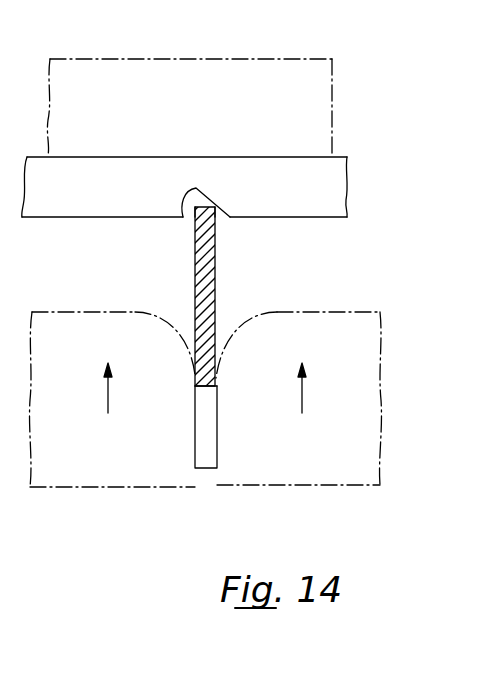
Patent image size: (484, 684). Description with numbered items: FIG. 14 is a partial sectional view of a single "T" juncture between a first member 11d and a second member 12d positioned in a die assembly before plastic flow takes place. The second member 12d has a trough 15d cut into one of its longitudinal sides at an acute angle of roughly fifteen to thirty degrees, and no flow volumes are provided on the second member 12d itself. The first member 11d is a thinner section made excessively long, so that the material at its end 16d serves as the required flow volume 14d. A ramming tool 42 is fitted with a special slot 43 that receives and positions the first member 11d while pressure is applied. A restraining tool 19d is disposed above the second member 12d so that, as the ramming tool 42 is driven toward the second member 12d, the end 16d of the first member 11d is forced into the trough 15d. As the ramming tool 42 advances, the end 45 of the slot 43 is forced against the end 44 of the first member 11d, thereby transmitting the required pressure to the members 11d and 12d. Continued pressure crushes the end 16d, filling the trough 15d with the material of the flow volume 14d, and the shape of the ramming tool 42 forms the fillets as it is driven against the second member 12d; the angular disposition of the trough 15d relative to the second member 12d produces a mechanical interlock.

The restraining tool 19d is at (314, 87).
The second member 12d is at (334, 196).
The trough 15d is at (191, 199).
The flow volume 14d is at (195, 215).
The end of first member 16d is at (224, 214).
The first member 11d is at (203, 290).
The end of first member 44 is at (210, 388).
The end of slot 45 is at (205, 470).
The slot 43 is at (198, 467).
The ramming tool 42 is at (322, 473).